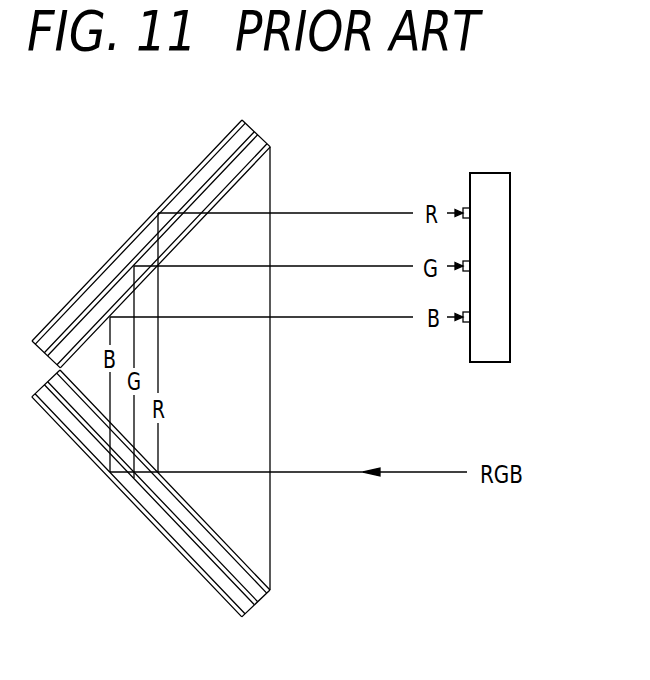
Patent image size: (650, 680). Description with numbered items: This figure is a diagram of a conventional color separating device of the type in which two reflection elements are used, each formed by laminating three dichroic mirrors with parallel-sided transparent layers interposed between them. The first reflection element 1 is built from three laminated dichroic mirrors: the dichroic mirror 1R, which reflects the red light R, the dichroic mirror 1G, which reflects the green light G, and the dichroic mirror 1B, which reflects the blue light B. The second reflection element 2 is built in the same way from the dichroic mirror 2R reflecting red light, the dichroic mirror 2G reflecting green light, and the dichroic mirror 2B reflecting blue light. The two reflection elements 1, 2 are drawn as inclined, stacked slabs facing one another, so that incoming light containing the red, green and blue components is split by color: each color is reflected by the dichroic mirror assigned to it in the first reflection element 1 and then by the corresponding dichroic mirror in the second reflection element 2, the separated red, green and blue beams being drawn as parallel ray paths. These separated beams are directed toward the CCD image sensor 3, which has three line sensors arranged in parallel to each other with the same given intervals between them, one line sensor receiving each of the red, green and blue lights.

The reflection element 1 is at (188, 510).
The dichroic mirror 1R is at (269, 589).
The dichroic mirror 1G is at (257, 602).
The dichroic mirror 1B is at (243, 615).
The reflection element 2 is at (188, 217).
The dichroic mirror 2R is at (245, 122).
The dichroic mirror 2G is at (256, 132).
The dichroic mirror 2B is at (272, 147).
The CCD image sensor 3 is at (510, 296).